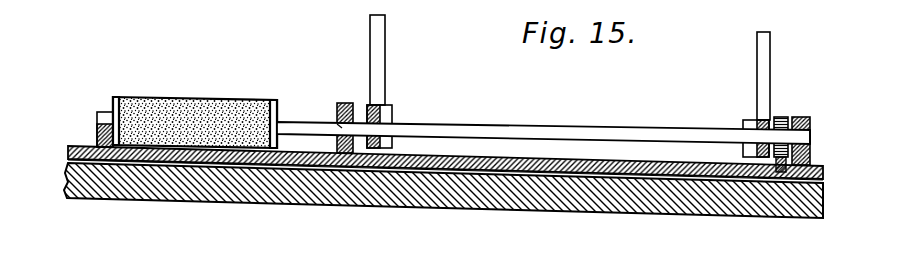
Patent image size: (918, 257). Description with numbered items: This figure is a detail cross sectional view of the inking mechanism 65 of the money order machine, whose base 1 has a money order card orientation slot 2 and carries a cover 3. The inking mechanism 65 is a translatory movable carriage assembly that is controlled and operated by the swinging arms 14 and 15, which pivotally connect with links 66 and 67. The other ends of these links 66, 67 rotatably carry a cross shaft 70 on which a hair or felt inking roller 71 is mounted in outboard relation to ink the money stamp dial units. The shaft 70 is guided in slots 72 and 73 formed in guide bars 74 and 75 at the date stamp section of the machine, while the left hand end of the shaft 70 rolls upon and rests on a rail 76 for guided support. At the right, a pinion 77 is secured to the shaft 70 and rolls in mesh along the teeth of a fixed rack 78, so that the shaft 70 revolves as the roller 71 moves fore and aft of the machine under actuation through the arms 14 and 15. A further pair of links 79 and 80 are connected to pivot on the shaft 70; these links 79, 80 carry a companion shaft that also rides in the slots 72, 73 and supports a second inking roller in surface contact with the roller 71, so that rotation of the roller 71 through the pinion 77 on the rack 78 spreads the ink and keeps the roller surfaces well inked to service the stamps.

The base 1 is at (163, 192).
The money order card orientation slot 2 is at (335, 170).
The cover 3 is at (230, 153).
The depending arm 14 is at (370, 25).
The depending arm 15 is at (765, 47).
The inking mechanism 65 is at (562, 114).
The link 66 is at (392, 115).
The link 67 is at (745, 125).
The cross shaft 70 is at (107, 113).
The inking roller 71 is at (175, 99).
The slot 72 is at (342, 124).
The slot 73 is at (808, 138).
The guide bar 74 is at (347, 103).
The guide bar 75 is at (798, 117).
The rail 76 is at (98, 133).
The pinion 77 is at (780, 117).
The fixed rack 78 is at (780, 175).
The link 79 is at (377, 110).
The link 80 is at (765, 120).